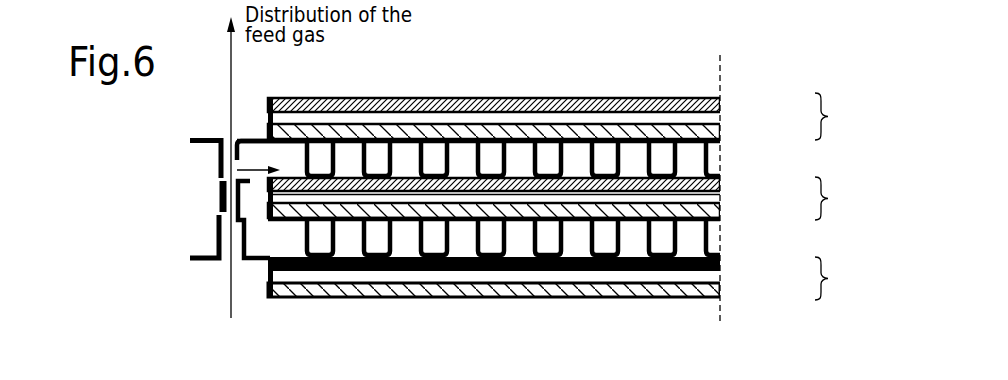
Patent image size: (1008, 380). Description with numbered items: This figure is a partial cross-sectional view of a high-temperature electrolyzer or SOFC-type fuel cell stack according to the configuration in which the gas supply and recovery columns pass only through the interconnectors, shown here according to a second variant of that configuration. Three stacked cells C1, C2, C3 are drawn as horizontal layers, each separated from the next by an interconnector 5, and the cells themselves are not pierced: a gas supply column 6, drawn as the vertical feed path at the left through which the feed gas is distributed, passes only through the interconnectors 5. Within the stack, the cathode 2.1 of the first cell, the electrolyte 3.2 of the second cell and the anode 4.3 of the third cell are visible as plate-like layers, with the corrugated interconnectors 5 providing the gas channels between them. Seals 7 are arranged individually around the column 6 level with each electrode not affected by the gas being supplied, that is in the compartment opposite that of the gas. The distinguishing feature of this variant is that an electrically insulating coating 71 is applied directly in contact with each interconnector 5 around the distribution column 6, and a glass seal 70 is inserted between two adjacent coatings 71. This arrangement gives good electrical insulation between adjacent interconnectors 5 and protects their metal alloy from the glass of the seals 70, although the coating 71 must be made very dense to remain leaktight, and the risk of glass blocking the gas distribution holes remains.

The cathode 2.1 is at (720, 103).
The electrolyte 3.2 is at (712, 193).
The anode 4.3 is at (720, 296).
The interconnector 5 is at (705, 152).
The gas supply column 6 is at (238, 255).
The seal 7 is at (277, 100).
The glass seal 70 is at (222, 197).
The electrically insulating coating 71 is at (221, 187).
The cell C1 is at (840, 116).
The cell C2 is at (841, 198).
The cell C3 is at (841, 278).